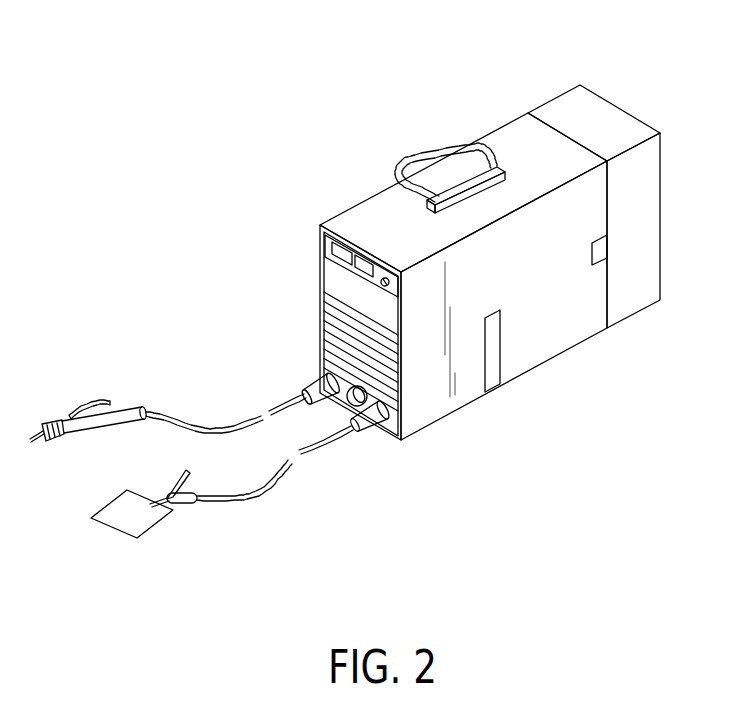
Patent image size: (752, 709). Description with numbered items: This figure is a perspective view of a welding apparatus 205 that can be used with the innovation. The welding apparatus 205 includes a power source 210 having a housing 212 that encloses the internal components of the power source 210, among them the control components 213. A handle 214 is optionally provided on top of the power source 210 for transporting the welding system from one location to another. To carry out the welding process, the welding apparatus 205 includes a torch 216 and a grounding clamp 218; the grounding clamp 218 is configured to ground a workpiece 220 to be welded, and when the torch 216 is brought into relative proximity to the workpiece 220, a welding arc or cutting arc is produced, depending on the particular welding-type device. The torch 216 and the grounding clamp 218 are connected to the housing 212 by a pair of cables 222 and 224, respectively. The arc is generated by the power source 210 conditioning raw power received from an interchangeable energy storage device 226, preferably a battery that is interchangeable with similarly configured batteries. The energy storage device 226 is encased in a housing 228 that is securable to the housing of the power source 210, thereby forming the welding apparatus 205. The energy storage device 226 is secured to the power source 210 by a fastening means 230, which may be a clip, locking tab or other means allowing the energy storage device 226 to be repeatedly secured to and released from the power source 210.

The welding apparatus 205 is at (347, 88).
The power source 210 is at (303, 178).
The housing 212 is at (513, 278).
The control components 213 is at (503, 348).
The handle 214 is at (440, 152).
The torch 216 is at (127, 407).
The grounding clamp 218 is at (180, 480).
The workpiece 220 is at (113, 513).
The cable 222 is at (197, 423).
The cable 224 is at (252, 497).
The energy storage device 226 is at (641, 90).
The housing 228 is at (643, 222).
The fastening means 230 is at (590, 254).